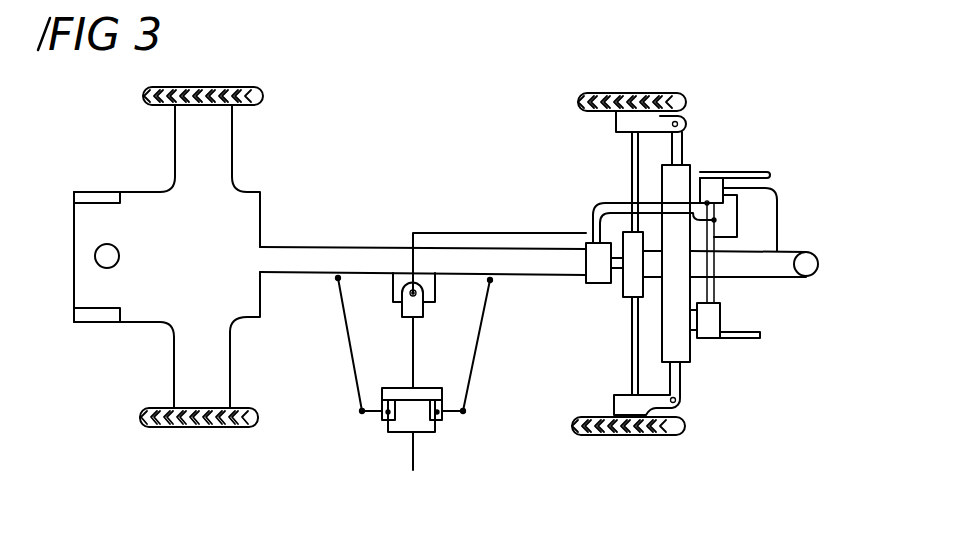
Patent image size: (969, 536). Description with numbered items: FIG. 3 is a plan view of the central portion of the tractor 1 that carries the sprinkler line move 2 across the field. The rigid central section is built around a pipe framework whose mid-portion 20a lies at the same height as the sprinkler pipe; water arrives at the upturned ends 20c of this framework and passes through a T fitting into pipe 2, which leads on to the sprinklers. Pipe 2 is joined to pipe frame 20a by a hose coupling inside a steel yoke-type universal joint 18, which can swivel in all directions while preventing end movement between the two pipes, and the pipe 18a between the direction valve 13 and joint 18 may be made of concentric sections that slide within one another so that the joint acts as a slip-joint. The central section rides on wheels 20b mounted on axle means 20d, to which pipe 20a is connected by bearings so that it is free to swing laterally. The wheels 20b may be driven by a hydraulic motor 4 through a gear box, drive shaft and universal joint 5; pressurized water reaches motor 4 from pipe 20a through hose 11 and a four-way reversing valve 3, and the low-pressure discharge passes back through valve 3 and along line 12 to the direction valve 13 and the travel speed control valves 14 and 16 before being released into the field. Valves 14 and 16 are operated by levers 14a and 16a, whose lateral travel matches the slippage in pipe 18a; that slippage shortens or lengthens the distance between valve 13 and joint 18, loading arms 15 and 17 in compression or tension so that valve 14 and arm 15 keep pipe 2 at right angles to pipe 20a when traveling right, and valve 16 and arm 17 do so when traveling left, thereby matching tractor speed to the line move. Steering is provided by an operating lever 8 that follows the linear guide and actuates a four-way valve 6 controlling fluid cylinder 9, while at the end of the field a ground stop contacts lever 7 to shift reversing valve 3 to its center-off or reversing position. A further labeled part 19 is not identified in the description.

The tractor 1 is at (120, 248).
The line move 2 is at (408, 452).
The four-way reversing valve 3 is at (711, 240).
The hydraulic motor 4 is at (650, 243).
The gear box, drive shaft and universal joint 5 is at (642, 264).
The four-way valve 6 is at (708, 320).
The lever 7 is at (740, 172).
The operating lever 8 is at (752, 340).
The fluid cylinder 9 is at (734, 263).
The hose 11 is at (778, 206).
The line 12 is at (472, 233).
The direction valve 13 is at (430, 388).
The travel speed control valve 14 is at (424, 434).
The lever 14a is at (448, 416).
The arm 15 is at (478, 373).
The travel speed control valve 16 is at (398, 434).
The lever 16a is at (376, 416).
The arm 17 is at (348, 366).
The universal joint 18 is at (392, 287).
The pipe 18a is at (418, 352).
The tractor body 19 is at (97, 192).
The mid-portion 20a is at (312, 247).
The wheels 20b is at (570, 108).
The upturned ends 20c is at (808, 272).
The axle means 20d is at (628, 356).